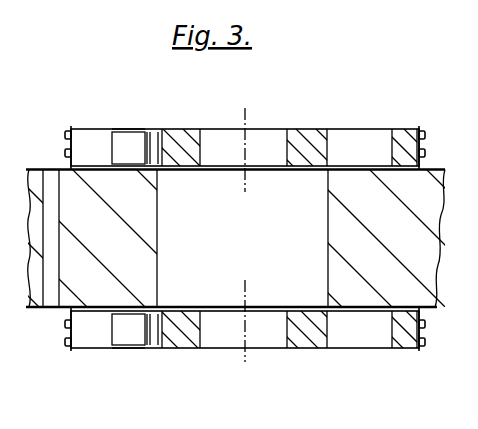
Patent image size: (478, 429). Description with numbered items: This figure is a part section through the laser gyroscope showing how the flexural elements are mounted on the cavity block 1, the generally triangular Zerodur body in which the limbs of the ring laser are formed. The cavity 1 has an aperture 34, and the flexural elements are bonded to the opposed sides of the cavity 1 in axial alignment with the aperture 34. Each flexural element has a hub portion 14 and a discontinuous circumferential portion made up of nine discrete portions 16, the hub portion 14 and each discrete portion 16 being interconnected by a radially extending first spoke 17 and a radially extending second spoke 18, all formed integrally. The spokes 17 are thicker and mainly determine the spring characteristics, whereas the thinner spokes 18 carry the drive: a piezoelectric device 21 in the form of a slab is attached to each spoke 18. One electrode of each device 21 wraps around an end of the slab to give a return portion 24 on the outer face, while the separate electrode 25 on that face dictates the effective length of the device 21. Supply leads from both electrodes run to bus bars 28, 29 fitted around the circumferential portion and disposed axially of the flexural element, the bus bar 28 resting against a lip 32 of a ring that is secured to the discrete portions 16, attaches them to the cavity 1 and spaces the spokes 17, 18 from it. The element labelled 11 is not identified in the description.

The cavity block 1 is at (73, 292).
The central bore / axis 11 is at (247, 172).
The hub portion 14 is at (308, 134).
The discrete circumferential portions 16 is at (412, 130).
The first spokes 17 is at (365, 134).
The second spokes 18 is at (97, 131).
The piezoelectric device 21 is at (123, 130).
The electrode return portion 24 is at (153, 131).
The electrode 25 is at (128, 133).
The bus bar 28 is at (66, 135).
The bus bar 29 is at (70, 128).
The lip 32 is at (66, 158).
The aperture 34 is at (157, 265).